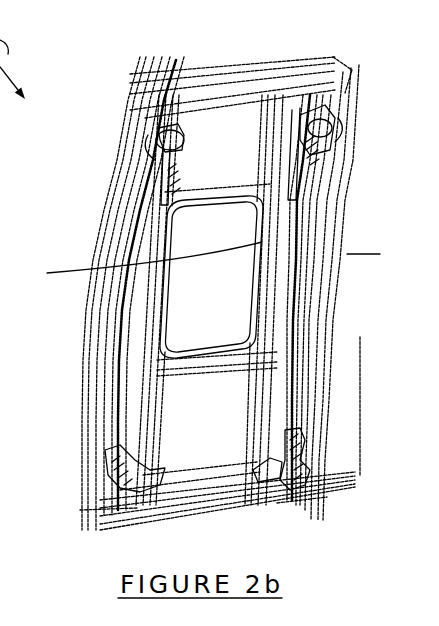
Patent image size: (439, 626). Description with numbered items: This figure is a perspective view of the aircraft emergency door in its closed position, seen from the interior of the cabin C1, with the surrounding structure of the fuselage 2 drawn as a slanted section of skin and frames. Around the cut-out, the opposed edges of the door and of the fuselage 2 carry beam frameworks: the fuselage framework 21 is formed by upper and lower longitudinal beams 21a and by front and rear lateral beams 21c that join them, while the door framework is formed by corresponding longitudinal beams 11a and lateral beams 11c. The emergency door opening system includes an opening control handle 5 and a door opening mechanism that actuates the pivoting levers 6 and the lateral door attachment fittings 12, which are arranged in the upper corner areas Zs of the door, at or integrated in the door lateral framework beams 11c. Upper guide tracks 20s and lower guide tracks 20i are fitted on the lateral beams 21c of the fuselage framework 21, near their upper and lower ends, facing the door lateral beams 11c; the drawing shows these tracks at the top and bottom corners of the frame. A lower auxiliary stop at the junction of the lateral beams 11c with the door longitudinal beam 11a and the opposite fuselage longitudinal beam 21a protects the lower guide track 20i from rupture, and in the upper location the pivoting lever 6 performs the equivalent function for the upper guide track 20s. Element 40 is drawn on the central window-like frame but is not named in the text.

The fuselage 2 is at (124, 172).
The opening control handle 5 is at (231, 105).
The pivoting lever 6 is at (180, 125).
The lateral door attachment fitting 12 is at (163, 155).
The fuselage framework longitudinal beam 21a is at (253, 80).
The upper guide track 20s is at (168, 190).
The lower guide track 20i is at (94, 468).
The window opening 40 is at (284, 190).
The fuselage framework 21 is at (334, 322).
The fuselage framework lateral beam 21c is at (195, 197).
The door lateral framework beam 11c is at (130, 348).
The door framework longitudinal beam 11a is at (210, 470).
The upper corner area Zs is at (138, 263).
The cabin C1 is at (363, 241).